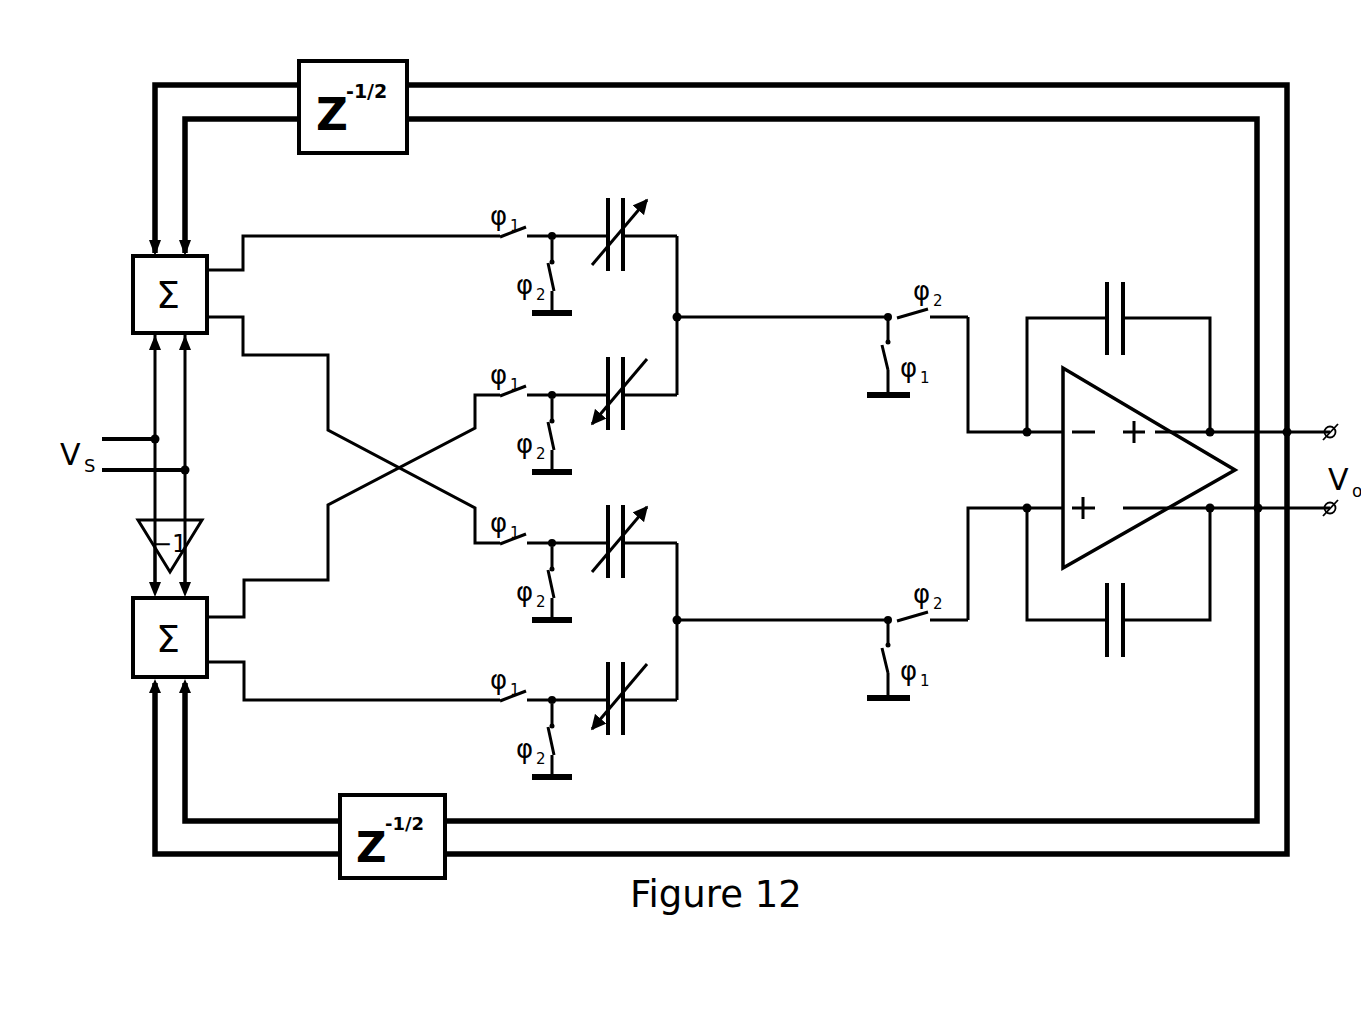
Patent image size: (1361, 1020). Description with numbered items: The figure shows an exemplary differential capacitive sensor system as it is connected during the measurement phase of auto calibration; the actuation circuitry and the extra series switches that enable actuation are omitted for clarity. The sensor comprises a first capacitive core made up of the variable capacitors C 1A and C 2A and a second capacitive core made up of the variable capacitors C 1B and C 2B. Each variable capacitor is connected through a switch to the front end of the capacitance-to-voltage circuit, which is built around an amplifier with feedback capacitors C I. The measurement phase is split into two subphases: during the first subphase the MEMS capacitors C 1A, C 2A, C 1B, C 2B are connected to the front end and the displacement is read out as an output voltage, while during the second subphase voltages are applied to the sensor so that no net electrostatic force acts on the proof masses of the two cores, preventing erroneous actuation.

The variable capacitor C1A 1A is at (588, 234).
The variable capacitor C2A 2A is at (588, 393).
The variable capacitor C1B 1B is at (588, 541).
The variable capacitor C2B 2B is at (588, 698).
The integrating capacitors CI I is at (1118, 469).